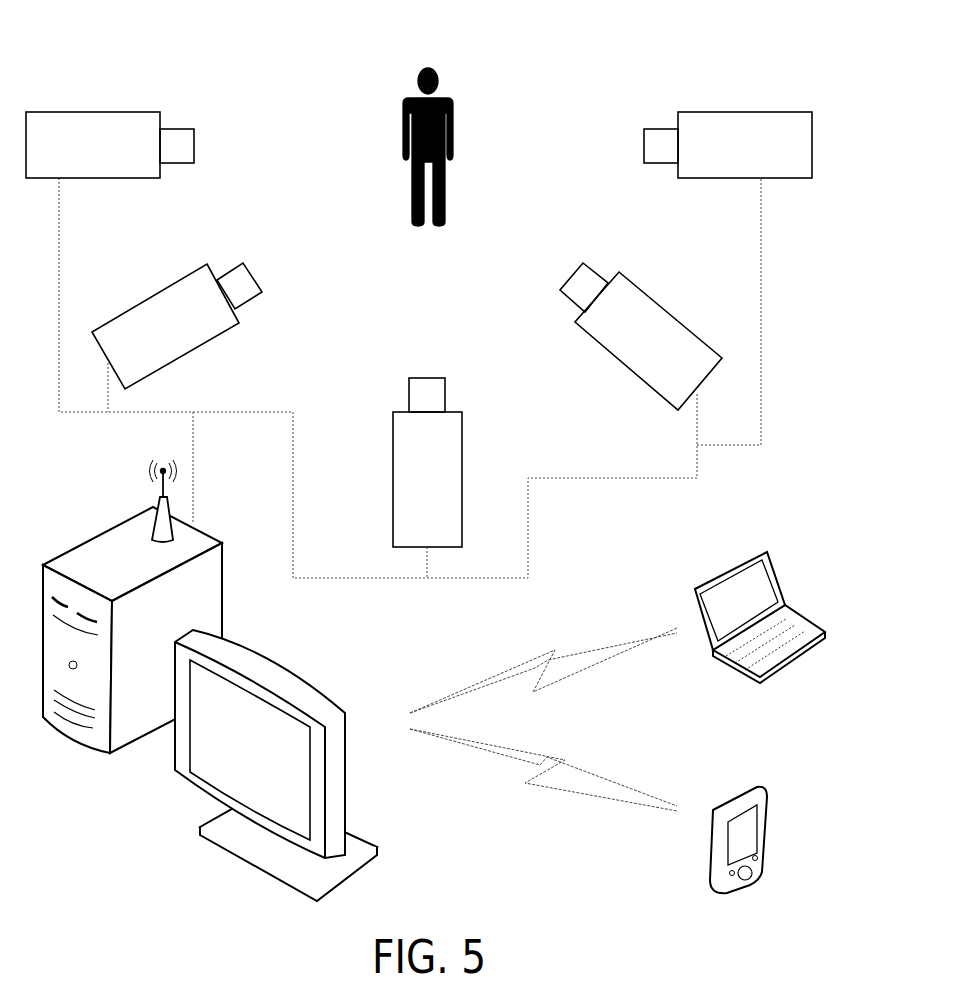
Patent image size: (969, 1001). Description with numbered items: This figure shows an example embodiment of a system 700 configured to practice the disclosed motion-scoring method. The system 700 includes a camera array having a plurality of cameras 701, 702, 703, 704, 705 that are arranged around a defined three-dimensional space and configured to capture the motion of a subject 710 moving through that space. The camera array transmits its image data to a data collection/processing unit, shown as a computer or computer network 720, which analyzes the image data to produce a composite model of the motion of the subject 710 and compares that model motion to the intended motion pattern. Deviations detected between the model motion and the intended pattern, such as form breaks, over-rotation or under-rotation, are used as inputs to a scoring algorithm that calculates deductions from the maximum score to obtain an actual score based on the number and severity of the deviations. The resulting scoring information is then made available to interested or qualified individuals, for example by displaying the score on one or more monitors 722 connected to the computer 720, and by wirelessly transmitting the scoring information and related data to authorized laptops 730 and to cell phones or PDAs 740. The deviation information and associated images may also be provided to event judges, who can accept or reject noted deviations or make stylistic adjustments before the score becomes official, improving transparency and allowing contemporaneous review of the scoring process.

The system 700 is at (165, 26).
The camera 701 is at (160, 112).
The camera 702 is at (239, 323).
The camera 703 is at (462, 470).
The camera 704 is at (682, 323).
The camera 705 is at (730, 112).
The subject 710 is at (443, 78).
The computer or computer network 720 is at (222, 597).
The monitor 722 is at (347, 792).
The laptop 730 is at (698, 582).
The cell phone or PDA 740 is at (722, 800).